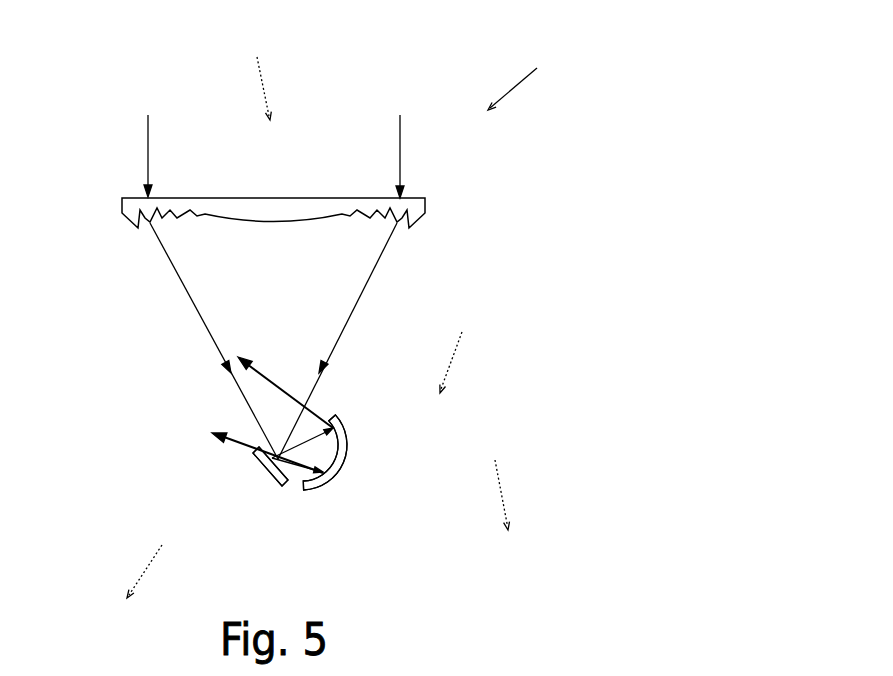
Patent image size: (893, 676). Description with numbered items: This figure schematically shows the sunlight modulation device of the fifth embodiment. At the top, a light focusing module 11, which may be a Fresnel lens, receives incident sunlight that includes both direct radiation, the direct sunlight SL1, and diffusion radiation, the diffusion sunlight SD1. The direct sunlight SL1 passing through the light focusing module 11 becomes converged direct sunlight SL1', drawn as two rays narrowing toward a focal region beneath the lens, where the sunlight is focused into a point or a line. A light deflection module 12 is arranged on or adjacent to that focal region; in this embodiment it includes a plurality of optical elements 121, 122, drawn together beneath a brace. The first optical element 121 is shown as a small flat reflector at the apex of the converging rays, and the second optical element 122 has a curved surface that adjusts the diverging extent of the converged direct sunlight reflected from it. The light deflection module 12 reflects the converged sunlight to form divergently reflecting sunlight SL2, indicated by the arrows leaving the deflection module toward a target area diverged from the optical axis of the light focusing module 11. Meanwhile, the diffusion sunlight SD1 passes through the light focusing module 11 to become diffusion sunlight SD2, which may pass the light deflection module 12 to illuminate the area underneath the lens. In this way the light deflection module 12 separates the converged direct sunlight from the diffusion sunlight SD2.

The light focusing module 11 is at (426, 200).
The light deflection module 12 is at (398, 548).
The optical element 121 is at (266, 484).
The optical element 122 is at (336, 476).
The direct sunlight SL1 is at (230, 156).
The converged direct sunlight SL1' is at (273, 341).
The reflecting sunlight SL2 is at (256, 367).
The diffusion sunlight SD1 is at (260, 90).
The diffusion sunlight SD2 is at (448, 365).